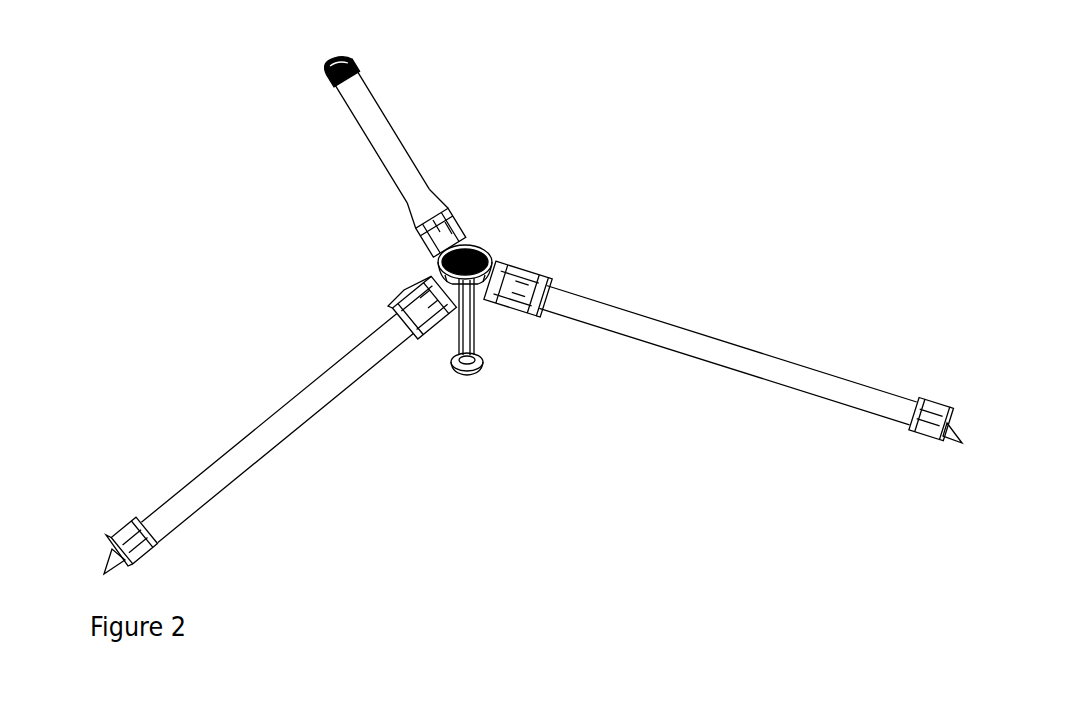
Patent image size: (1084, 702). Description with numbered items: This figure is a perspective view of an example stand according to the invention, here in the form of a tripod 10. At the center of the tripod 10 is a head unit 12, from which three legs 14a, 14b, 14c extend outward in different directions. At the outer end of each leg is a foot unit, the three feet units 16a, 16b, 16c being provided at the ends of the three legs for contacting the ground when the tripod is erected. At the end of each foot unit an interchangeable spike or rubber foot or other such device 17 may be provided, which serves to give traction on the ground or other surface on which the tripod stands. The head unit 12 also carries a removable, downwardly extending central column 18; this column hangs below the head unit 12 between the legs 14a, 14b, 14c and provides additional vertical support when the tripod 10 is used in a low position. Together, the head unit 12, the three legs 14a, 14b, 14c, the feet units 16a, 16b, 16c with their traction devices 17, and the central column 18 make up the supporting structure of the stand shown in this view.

The tripod 10 is at (688, 89).
The head unit 12 is at (493, 243).
The leg 14a is at (417, 150).
The leg 14b is at (680, 320).
The leg 14c is at (360, 453).
The foot unit 16a is at (363, 57).
The foot unit 16b is at (885, 475).
The foot unit 16c is at (202, 565).
The spike or rubber foot 17 is at (92, 568).
The central column 18 is at (530, 410).